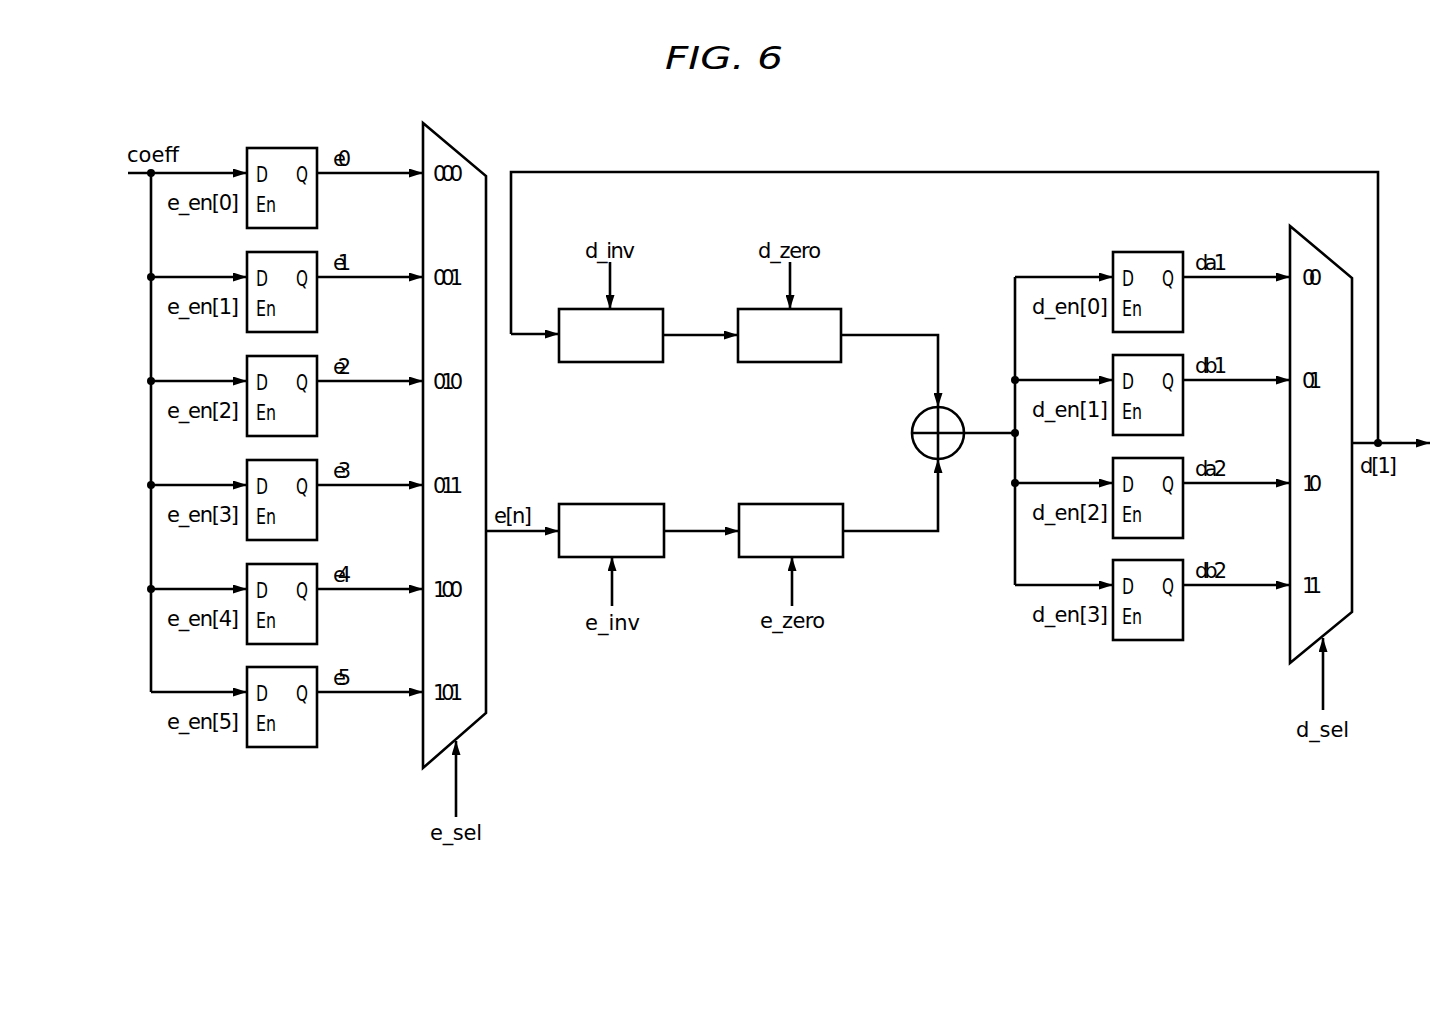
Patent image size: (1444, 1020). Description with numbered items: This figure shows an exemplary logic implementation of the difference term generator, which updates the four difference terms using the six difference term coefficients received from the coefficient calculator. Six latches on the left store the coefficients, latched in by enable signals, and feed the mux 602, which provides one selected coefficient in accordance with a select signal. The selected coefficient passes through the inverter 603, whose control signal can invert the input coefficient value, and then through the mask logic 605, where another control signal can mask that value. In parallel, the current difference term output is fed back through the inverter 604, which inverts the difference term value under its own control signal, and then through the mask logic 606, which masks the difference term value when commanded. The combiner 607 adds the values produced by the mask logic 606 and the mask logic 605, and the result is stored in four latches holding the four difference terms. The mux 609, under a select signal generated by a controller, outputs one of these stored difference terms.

The mux 602 is at (463, 736).
The inverter 603 is at (611, 504).
The inverter 604 is at (610, 362).
The mask logic 605 is at (789, 504).
The mask logic 606 is at (790, 362).
The combiner 607 is at (921, 414).
The mux 609 is at (1337, 632).